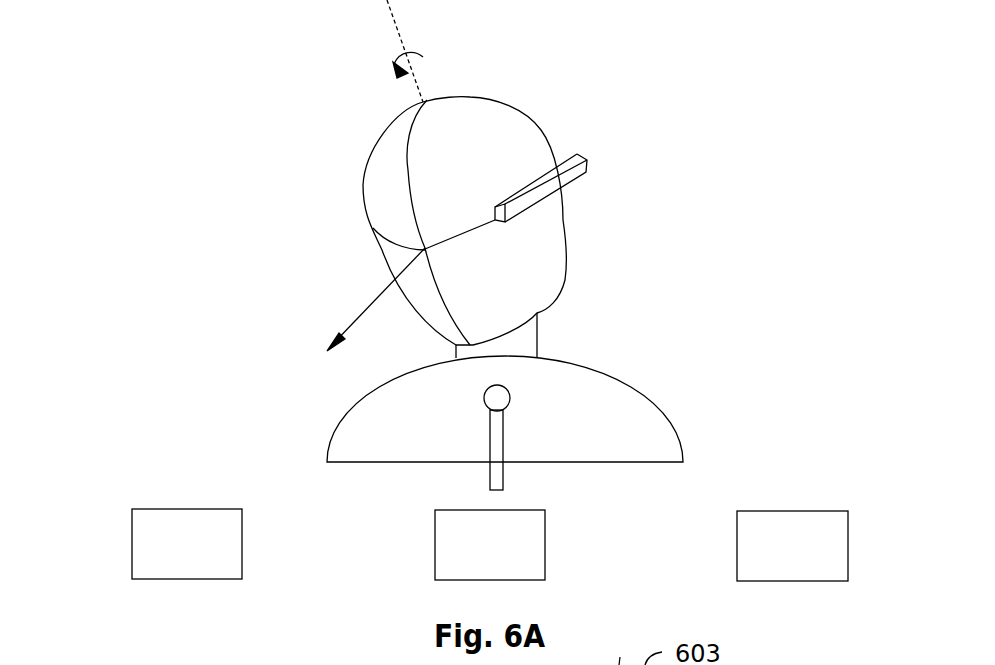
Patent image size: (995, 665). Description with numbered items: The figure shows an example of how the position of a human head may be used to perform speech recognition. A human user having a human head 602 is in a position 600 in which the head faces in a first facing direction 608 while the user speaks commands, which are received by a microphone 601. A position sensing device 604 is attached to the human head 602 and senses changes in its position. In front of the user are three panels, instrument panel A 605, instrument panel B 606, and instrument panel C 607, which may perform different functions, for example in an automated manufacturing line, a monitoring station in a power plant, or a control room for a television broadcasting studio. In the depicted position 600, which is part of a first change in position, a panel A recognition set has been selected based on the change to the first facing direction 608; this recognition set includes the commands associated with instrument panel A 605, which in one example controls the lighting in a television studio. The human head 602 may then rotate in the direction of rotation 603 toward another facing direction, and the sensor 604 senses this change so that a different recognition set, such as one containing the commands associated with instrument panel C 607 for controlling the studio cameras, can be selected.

The position 600 is at (243, 117).
The microphone 601 is at (487, 455).
The human head 602 is at (385, 133).
The direction of rotation 603 is at (428, 62).
The position sensing device 604 is at (570, 173).
The instrument panel A 605 is at (132, 565).
The instrument panel B 606 is at (435, 568).
The instrument panel C 607 is at (737, 570).
The first facing direction 608 is at (358, 312).